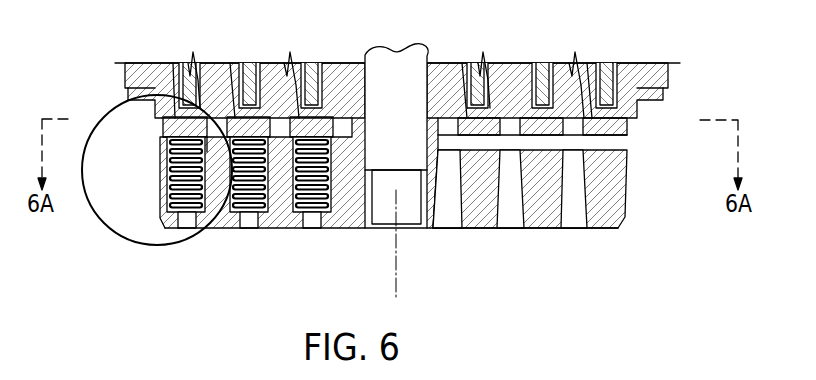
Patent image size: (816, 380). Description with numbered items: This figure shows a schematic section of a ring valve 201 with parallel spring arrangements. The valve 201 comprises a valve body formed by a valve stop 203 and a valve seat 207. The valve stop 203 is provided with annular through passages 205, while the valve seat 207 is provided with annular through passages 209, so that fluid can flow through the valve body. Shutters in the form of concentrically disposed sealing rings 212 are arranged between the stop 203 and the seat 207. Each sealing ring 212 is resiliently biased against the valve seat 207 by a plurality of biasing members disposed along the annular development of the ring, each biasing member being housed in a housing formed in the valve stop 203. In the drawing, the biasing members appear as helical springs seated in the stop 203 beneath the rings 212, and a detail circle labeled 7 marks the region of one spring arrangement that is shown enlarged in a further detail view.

The ring valve 201 is at (660, 53).
The valve stop 203 is at (282, 230).
The annular through passages 205 is at (452, 214).
The valve seat 207 is at (137, 78).
The annular through passages 209 is at (529, 77).
The sealing rings 212 is at (619, 124).
The detail circle of FIG. 7 is at (95, 218).